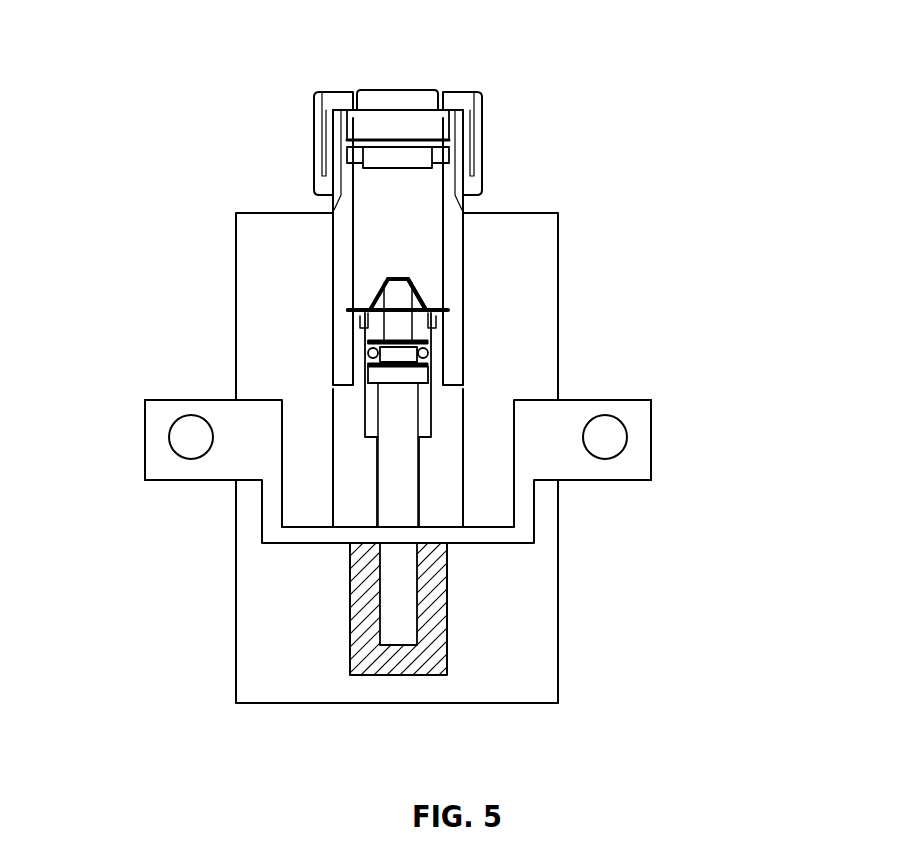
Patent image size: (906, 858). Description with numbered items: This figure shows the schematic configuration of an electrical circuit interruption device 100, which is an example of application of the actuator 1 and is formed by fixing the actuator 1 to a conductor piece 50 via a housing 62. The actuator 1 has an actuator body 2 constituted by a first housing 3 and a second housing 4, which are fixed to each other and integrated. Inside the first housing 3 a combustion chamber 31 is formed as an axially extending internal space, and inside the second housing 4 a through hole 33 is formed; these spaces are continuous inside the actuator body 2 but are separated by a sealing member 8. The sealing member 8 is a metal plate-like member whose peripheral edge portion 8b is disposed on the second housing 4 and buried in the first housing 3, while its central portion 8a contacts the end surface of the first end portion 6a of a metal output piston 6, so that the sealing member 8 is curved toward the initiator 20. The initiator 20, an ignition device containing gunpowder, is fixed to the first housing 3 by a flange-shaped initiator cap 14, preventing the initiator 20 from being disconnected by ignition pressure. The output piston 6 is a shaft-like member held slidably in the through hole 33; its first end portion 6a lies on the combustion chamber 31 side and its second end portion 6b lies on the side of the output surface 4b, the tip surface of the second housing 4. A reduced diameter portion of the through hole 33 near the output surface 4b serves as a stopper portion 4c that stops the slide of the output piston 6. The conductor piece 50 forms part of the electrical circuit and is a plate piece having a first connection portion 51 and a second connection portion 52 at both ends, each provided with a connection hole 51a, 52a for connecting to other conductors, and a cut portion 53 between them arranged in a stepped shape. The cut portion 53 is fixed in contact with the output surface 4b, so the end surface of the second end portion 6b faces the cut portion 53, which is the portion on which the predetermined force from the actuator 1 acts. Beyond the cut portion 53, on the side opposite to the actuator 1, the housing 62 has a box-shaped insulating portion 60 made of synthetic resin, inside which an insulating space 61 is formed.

The actuator 1 is at (560, 47).
The actuator body 2 is at (302, 298).
The first housing 3 is at (347, 306).
The second housing 4 is at (358, 442).
The output surface 4b is at (345, 530).
The stopper portion 4c is at (427, 515).
The output piston 6 is at (393, 376).
The first end portion 6a is at (403, 325).
The second end portion 6b is at (427, 483).
The sealing member 8 is at (420, 290).
The central portion 8a is at (399, 277).
The peripheral edge portion 8b is at (450, 310).
The initiator cap 14 is at (483, 98).
The initiator 20 is at (405, 88).
The combustion chamber 31 is at (428, 228).
The through hole 33 is at (420, 422).
The conductor piece 50 is at (637, 376).
The first connection portion 51 is at (186, 468).
The connection hole 51a is at (190, 418).
The second connection portion 52 is at (617, 470).
The connection hole 52a is at (607, 420).
The cut portion 53 is at (402, 533).
The insulating portion 60 is at (421, 662).
The insulating space 61 is at (399, 625).
The housing 62 is at (296, 690).
The electrical circuit interruption device 100 is at (669, 704).